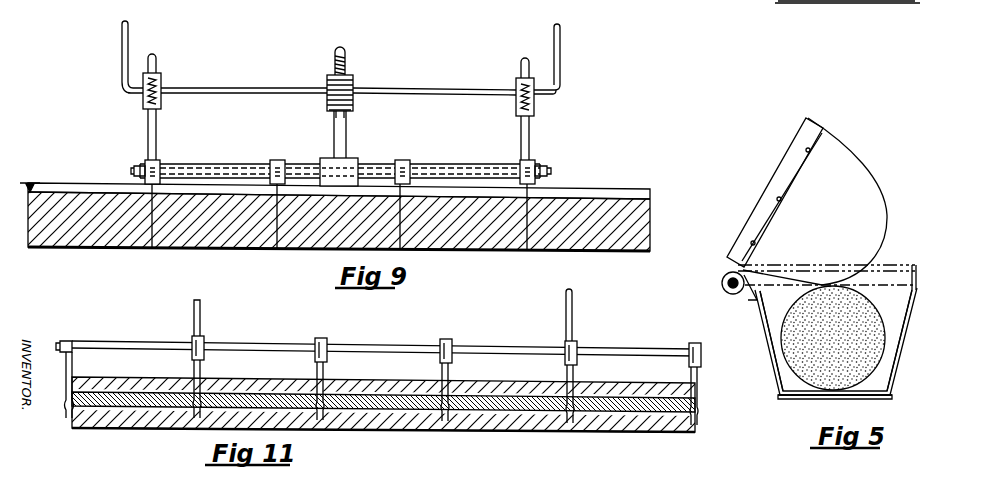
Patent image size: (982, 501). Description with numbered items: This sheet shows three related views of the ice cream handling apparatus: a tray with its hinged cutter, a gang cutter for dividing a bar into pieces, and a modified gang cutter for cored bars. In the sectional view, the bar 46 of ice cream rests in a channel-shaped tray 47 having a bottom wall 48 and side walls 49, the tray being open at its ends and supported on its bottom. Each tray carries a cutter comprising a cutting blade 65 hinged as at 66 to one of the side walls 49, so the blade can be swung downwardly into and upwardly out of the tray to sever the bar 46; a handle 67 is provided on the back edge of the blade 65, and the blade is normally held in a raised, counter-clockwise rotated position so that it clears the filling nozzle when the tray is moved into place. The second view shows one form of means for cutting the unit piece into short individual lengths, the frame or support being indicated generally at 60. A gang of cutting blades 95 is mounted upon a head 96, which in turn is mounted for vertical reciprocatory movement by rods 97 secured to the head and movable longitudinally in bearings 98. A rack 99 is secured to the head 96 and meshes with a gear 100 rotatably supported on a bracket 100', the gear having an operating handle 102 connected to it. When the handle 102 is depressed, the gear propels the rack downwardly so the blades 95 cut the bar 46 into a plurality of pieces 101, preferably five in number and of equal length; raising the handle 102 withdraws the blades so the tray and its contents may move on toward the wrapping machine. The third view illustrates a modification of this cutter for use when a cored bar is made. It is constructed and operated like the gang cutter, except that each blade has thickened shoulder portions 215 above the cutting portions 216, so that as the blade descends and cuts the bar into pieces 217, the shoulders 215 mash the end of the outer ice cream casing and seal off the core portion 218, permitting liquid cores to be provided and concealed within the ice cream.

In FIG. 9, the bar of ice cream 46 is at (124, 242).
In FIG. 5, the bar of ice cream 46 is at (861, 313).
In FIG. 5, the channel-shaped tray 47 is at (917, 300).
In FIG. 5, the bottom wall 48 is at (870, 396).
In FIG. 5, the side wall 49 is at (762, 339).
In FIG. 9, the frame 60 is at (275, 2).
In FIG. 5, the cutting blade 65 is at (878, 200).
In FIG. 5, the hinge 66 is at (722, 283).
In FIG. 5, the handle 67 is at (790, 147).
In FIG. 9, the cutting blades 95 is at (140, 183).
In FIG. 9, the head 96 is at (229, 164).
In FIG. 9, the rods 97 is at (157, 127).
In FIG. 9, the bearings 98 is at (161, 80).
In FIG. 9, the rack 99 is at (346, 118).
In FIG. 9, the gear 100 is at (325, 79).
In FIG. 9, the bracket 100' is at (544, 108).
In FIG. 9, the pieces 101 is at (248, 245).
In FIG. 9, the operating handle 102 is at (560, 58).
In FIG. 11, the thickened shoulder portions 215 is at (458, 384).
In FIG. 11, the cutting portions 216 is at (447, 420).
In FIG. 11, the pieces 217 is at (512, 428).
In FIG. 11, the core portion 218 is at (388, 412).